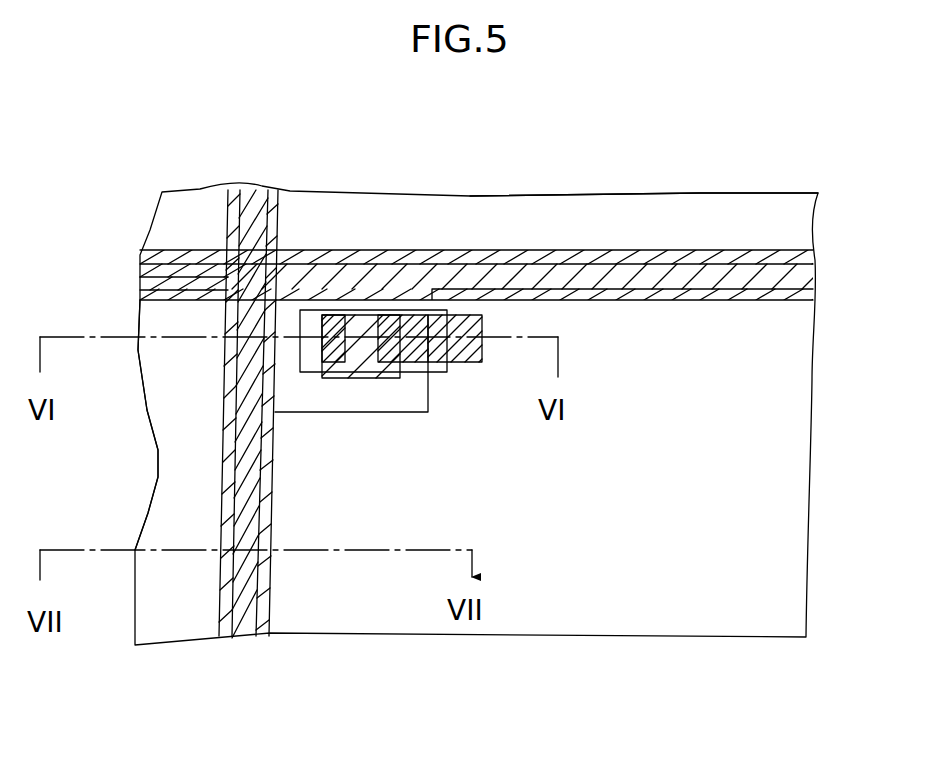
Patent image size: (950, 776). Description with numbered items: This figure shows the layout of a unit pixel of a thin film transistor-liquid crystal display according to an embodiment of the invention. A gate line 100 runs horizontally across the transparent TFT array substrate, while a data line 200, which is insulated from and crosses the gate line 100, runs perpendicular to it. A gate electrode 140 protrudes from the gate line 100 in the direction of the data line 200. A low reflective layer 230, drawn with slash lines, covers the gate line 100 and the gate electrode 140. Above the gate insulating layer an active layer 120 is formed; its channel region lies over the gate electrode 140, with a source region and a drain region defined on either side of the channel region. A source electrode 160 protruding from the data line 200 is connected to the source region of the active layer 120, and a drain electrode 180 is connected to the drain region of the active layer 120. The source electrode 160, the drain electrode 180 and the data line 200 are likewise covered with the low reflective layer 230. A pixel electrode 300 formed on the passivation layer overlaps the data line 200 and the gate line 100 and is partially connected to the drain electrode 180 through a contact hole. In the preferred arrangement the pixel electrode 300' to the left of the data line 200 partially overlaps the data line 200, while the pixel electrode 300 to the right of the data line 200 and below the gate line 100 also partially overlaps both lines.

The gate line 100 is at (806, 284).
The active layer 120 is at (378, 305).
The gate electrode 140 is at (369, 378).
The source electrode 160 is at (288, 346).
The drain electrode 180 is at (478, 362).
The data line 200 is at (268, 212).
The low reflective layer 230 is at (245, 603).
The pixel electrode 300 is at (501, 414).
The pixel electrode 300' is at (121, 425).